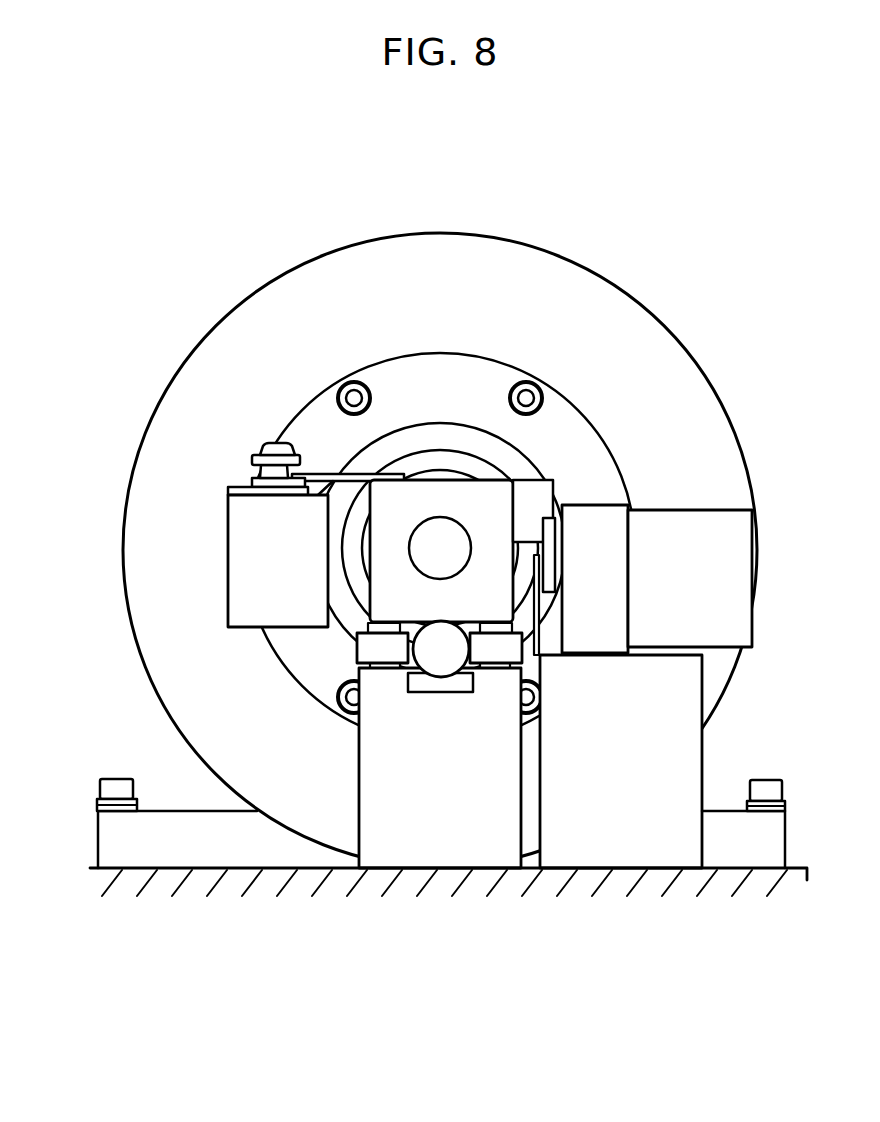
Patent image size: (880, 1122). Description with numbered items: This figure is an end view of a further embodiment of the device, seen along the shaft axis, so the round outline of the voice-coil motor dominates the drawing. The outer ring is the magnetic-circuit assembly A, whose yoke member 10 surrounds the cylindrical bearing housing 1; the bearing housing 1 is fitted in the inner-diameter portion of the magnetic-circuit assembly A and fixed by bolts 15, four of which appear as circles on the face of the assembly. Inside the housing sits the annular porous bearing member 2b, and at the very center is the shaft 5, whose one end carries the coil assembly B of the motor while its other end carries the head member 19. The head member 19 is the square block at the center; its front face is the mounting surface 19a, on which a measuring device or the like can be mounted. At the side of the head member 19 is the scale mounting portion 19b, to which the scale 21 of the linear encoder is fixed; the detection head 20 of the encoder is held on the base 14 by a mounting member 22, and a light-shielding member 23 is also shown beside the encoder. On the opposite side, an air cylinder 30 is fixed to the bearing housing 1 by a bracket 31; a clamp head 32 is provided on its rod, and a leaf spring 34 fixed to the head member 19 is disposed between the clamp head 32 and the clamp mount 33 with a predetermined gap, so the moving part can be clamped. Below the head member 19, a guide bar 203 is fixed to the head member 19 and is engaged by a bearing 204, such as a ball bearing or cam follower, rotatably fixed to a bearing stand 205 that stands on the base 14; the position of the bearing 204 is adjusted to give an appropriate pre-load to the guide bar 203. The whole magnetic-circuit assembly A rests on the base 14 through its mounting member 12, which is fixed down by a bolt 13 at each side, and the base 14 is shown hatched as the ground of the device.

The bearing housing 1 is at (456, 367).
The porous bearing member 2b is at (453, 460).
The shaft 5 is at (430, 480).
The yoke member 10 is at (532, 253).
The mounting member 12 is at (98, 830).
The bolt 13 is at (113, 781).
The base 14 is at (728, 888).
The bolts 15 is at (350, 380).
The head member 19 is at (385, 603).
The mounting surface 19a is at (502, 610).
The scale mounting portion 19b is at (532, 493).
The detection head 20 is at (738, 553).
The scale 21 is at (552, 531).
The mounting member 22 is at (683, 695).
The light-shielding member 23 is at (538, 646).
The air cylinder 30 is at (243, 603).
The bracket 31 is at (228, 492).
The clamp head 32 is at (252, 467).
The clamp mount 33 is at (245, 489).
The leaf spring 34 is at (260, 447).
The guide bar 203 is at (430, 662).
The bearing 204 is at (383, 652).
The bearing stand 205 is at (453, 845).
The magnetic-circuit assembly A is at (507, 228).
The coil assembly B is at (663, 500).